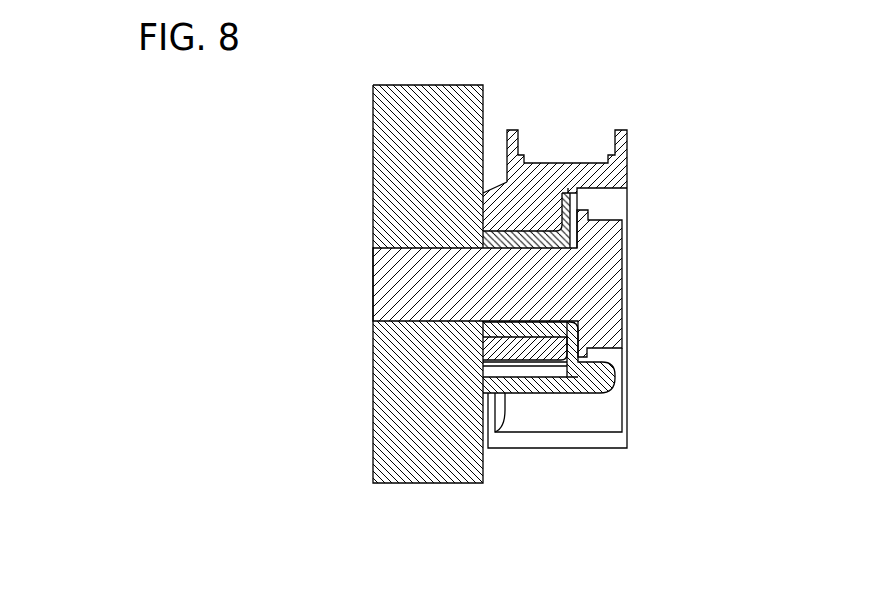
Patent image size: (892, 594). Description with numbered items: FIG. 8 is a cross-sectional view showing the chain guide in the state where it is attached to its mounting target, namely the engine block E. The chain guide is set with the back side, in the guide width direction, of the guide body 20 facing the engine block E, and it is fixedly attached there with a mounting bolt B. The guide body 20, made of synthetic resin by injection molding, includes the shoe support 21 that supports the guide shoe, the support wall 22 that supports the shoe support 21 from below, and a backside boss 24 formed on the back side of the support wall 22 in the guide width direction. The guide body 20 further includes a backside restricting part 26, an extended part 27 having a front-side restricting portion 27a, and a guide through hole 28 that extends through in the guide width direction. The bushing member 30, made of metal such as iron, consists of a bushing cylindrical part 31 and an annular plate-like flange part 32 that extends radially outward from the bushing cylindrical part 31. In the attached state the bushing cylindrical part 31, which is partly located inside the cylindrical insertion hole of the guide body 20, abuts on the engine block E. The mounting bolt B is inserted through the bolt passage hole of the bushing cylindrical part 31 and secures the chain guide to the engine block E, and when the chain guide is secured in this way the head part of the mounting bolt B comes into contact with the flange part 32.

The engine block E is at (415, 120).
The mounting bolt B is at (609, 280).
The guide body 20 is at (620, 172).
The shoe support 21 is at (578, 170).
The support wall 22 is at (526, 136).
The backside restricting part 26 is at (563, 207).
The backside boss 24 is at (505, 212).
The extended part 27 is at (577, 383).
The front-side restricting portion 27a is at (607, 369).
The guide through hole 28 is at (488, 364).
The bushing member 30 is at (535, 420).
The bushing cylindrical part 31 is at (510, 328).
The flange part 32 is at (571, 360).